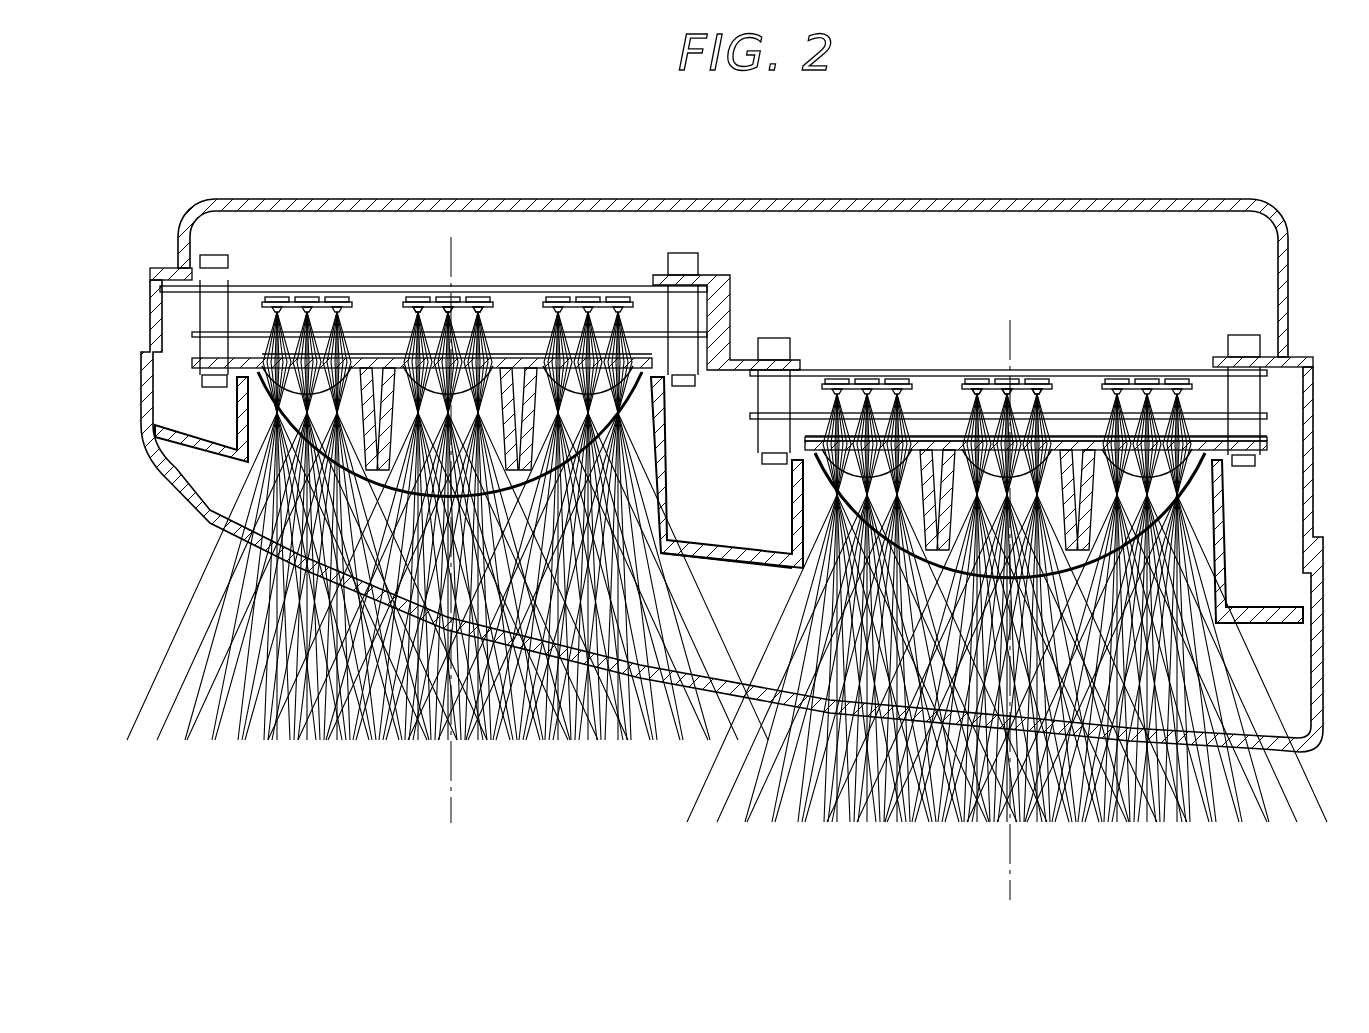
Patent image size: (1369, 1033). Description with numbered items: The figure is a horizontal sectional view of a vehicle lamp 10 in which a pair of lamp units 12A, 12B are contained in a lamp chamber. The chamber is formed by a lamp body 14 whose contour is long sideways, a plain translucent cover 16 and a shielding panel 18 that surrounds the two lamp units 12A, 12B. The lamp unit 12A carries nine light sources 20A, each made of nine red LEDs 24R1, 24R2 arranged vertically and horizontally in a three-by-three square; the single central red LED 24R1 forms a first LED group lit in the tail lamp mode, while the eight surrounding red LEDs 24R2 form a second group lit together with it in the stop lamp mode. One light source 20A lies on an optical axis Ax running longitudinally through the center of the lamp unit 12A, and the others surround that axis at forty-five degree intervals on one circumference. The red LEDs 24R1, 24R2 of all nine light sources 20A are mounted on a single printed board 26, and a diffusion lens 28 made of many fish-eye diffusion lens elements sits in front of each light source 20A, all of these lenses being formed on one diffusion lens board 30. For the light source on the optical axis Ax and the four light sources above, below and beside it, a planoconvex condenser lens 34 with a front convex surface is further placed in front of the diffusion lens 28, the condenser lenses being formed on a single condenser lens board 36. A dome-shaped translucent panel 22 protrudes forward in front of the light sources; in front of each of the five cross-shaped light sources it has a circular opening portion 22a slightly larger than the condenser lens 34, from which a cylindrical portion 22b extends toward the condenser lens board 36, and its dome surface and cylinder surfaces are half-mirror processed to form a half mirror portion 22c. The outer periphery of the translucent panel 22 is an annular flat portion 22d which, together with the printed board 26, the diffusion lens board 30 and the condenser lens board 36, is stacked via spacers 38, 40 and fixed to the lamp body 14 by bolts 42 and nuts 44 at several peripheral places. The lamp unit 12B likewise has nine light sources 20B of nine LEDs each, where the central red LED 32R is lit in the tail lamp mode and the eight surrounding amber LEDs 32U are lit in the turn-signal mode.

The vehicle lamp 10 is at (1242, 168).
The lamp unit 12A is at (975, 378).
The lamp unit 12B is at (433, 242).
The lamp body 14 is at (918, 197).
The translucent cover 16 is at (757, 700).
The shielding panel 18 is at (738, 560).
The light source 20A is at (868, 360).
The light source 20B is at (318, 280).
The translucent panel 22 is at (540, 485).
The opening portion 22a is at (288, 440).
The cylindrical portion 22b is at (335, 505).
The half mirror portion 22c is at (398, 560).
The annular flat portion 22d is at (765, 460).
The red LED 24R1 is at (998, 383).
The red LED 24R2 is at (973, 390).
The printed board 26 is at (848, 367).
The diffusion lens 28 is at (333, 352).
The diffusion lens board 30 is at (760, 420).
The red LED 32R is at (438, 297).
The amber LED 32U is at (455, 298).
The condenser lens 34 is at (496, 372).
The condenser lens board 36 is at (747, 446).
The spacer 38 is at (770, 400).
The spacer 40 is at (757, 445).
The bolt 42 is at (772, 466).
The nut 44 is at (772, 348).
The optical axis Ax is at (452, 822).